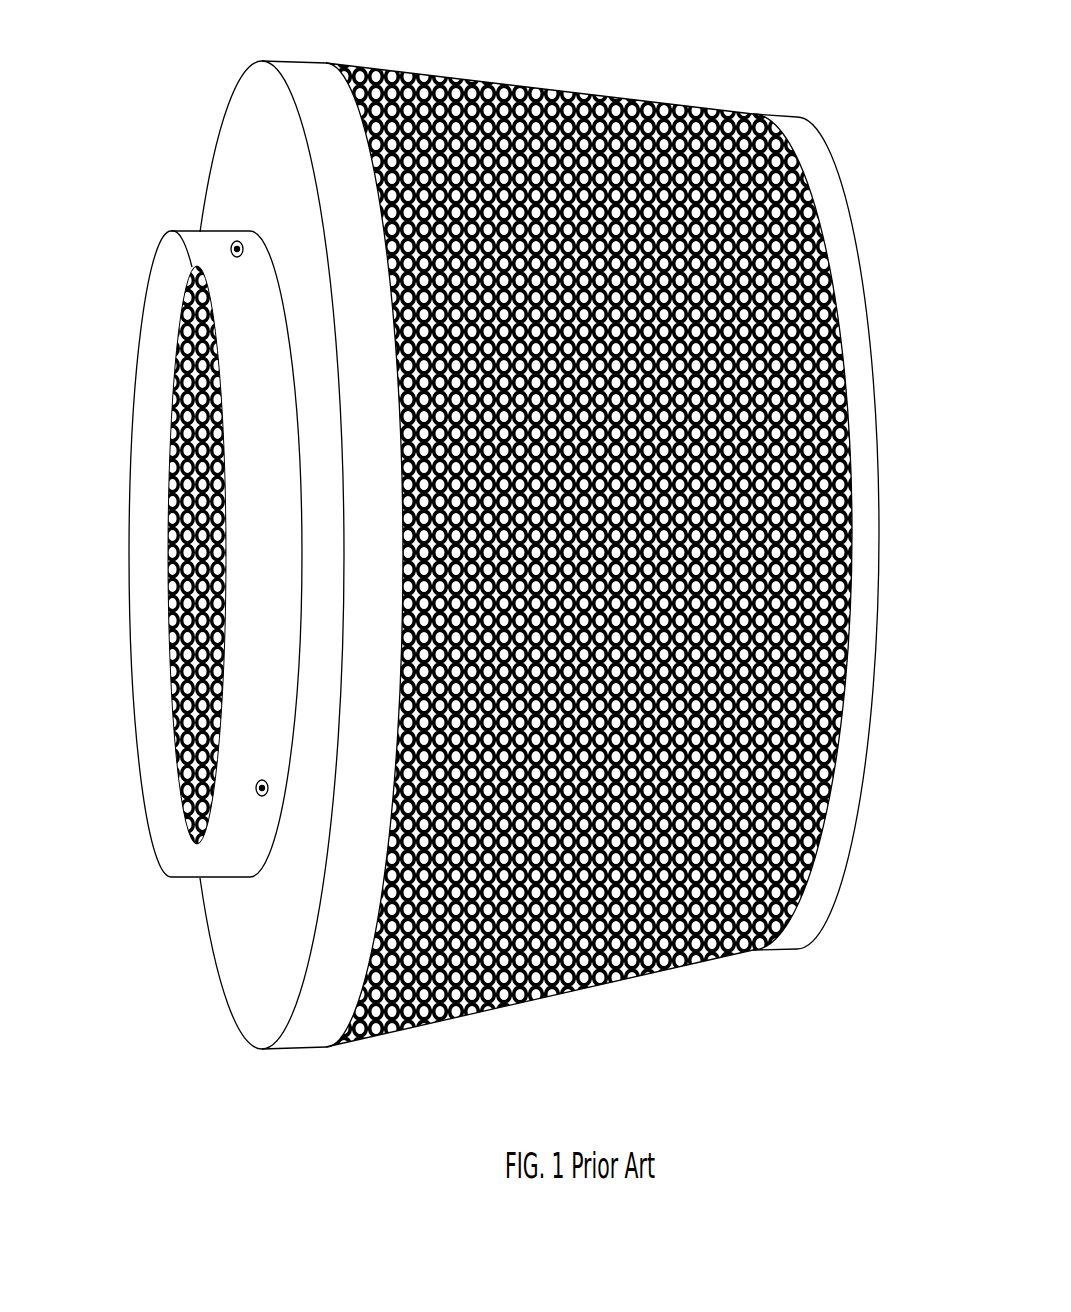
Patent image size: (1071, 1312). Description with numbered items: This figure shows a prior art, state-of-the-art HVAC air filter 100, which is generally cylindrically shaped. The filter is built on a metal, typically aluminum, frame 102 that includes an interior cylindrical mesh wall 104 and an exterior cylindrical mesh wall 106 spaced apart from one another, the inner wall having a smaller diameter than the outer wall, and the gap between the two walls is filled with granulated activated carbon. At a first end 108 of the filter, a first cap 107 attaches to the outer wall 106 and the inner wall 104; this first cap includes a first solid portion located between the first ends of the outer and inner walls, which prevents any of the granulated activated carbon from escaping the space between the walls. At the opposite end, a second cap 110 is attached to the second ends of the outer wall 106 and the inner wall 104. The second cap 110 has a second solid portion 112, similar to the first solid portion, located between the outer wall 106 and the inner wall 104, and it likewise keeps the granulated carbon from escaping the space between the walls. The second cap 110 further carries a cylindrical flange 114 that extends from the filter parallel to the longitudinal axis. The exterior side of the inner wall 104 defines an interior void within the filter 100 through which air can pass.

The filter 100 is at (507, 567).
The frame 102 is at (702, 958).
The interior cylindrical mesh wall 104 is at (180, 561).
The exterior cylindrical mesh wall 106 is at (603, 127).
The first cap 107 is at (866, 473).
The first end 108 is at (870, 350).
The second cap 110 is at (217, 972).
The second solid portion 112 is at (243, 150).
The cylindrical flange 114 is at (247, 403).